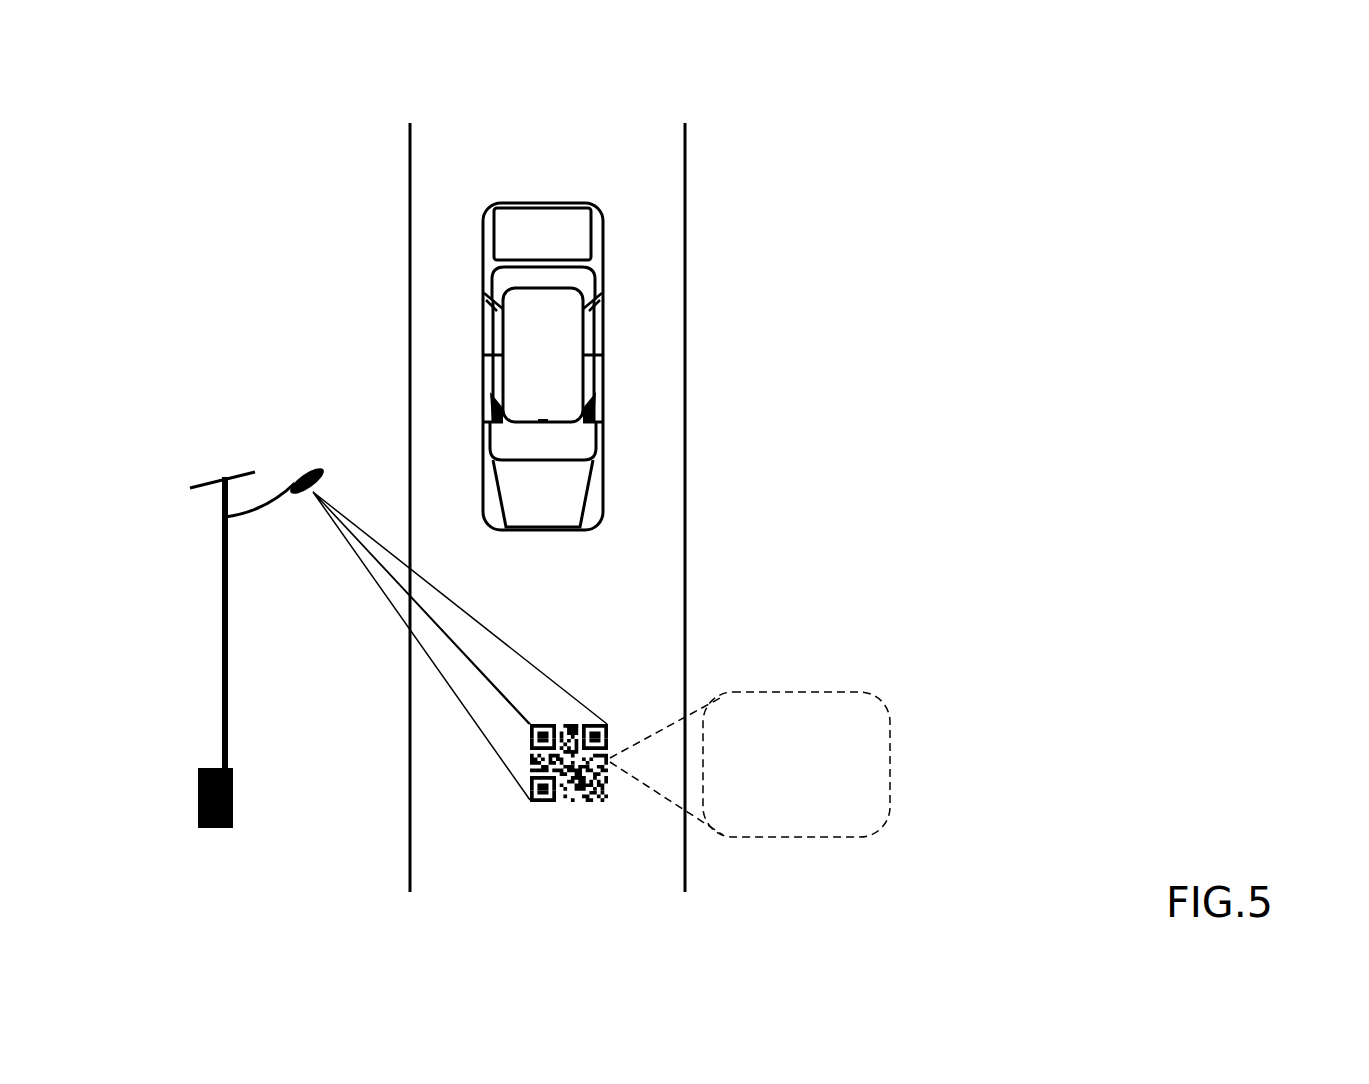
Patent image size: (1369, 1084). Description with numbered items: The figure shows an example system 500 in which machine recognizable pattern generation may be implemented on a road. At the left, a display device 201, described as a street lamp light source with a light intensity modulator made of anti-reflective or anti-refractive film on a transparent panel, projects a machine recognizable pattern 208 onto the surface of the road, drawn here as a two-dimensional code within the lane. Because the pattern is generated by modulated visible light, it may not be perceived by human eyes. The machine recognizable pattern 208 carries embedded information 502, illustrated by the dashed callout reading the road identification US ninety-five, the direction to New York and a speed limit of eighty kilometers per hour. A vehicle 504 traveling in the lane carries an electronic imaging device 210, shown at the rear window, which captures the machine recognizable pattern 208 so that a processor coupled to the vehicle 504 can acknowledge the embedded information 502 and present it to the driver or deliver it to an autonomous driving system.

The example system 500 is at (400, 491).
The vehicle 504 is at (543, 328).
The electronic imaging device 210 is at (543, 425).
The display device 201 is at (258, 610).
The machine recognizable pattern 208 is at (480, 695).
The embedded information 502 is at (892, 763).